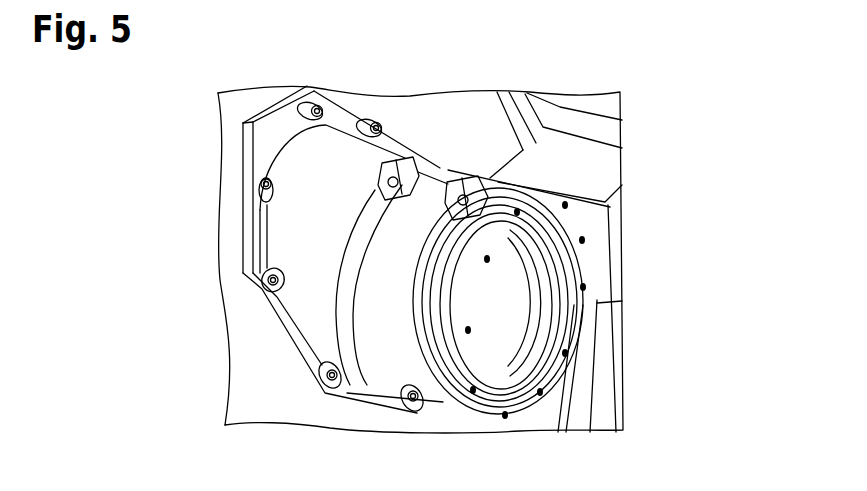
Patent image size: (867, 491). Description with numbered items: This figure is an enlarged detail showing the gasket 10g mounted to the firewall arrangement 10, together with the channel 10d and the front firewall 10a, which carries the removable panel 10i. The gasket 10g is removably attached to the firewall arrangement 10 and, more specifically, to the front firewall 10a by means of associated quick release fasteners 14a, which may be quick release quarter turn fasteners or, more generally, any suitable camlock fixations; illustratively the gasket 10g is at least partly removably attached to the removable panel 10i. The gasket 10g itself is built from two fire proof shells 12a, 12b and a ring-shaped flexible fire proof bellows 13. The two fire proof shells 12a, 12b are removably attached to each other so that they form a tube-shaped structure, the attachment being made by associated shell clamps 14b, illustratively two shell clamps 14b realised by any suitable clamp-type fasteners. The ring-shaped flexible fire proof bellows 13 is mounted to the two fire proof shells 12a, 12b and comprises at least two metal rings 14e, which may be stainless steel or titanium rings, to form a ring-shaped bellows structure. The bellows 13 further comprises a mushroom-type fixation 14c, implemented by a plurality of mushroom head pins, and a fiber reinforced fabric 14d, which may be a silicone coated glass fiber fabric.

The firewall arrangement 10 is at (600, 86).
The front firewall 10a is at (263, 358).
The channel 10d is at (607, 286).
The gasket 10g is at (393, 338).
The removable panel 10i is at (240, 107).
The fire proof shell 12a is at (300, 222).
The fire proof shell 12b is at (423, 162).
The ring-shaped flexible fire proof bellows 13 is at (549, 339).
The quick release fasteners 14a is at (332, 102).
The shell clamps 14b is at (495, 172).
The mushroom-type fixation 14c is at (591, 207).
The fiber reinforced fabric 14d is at (483, 247).
The metal rings 14e is at (558, 343).